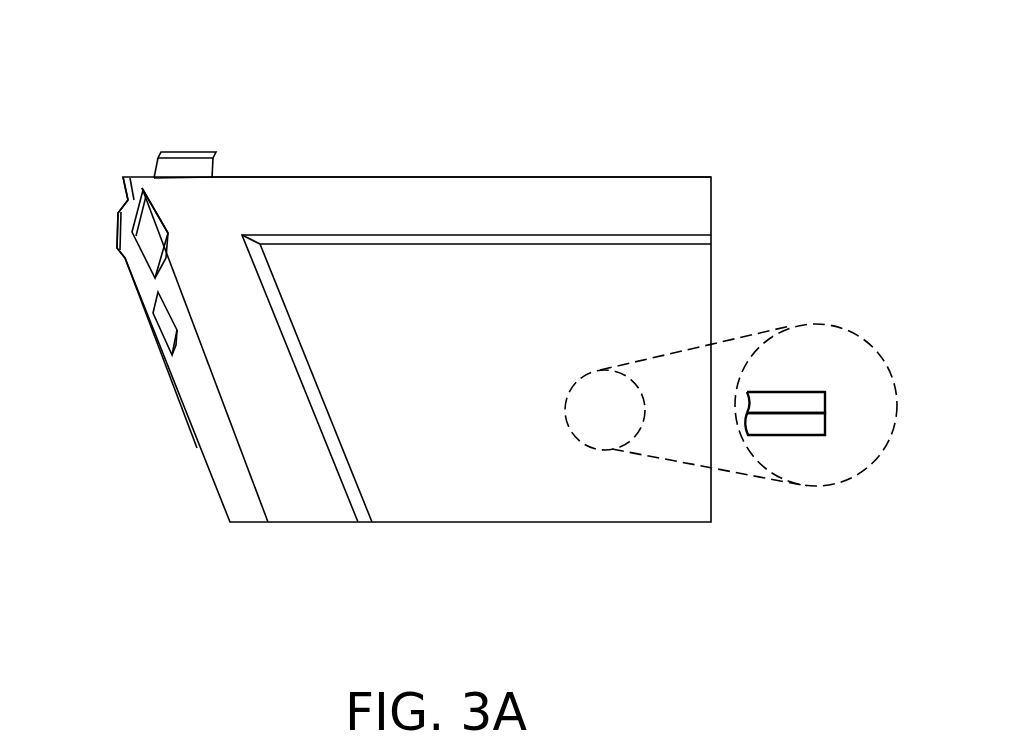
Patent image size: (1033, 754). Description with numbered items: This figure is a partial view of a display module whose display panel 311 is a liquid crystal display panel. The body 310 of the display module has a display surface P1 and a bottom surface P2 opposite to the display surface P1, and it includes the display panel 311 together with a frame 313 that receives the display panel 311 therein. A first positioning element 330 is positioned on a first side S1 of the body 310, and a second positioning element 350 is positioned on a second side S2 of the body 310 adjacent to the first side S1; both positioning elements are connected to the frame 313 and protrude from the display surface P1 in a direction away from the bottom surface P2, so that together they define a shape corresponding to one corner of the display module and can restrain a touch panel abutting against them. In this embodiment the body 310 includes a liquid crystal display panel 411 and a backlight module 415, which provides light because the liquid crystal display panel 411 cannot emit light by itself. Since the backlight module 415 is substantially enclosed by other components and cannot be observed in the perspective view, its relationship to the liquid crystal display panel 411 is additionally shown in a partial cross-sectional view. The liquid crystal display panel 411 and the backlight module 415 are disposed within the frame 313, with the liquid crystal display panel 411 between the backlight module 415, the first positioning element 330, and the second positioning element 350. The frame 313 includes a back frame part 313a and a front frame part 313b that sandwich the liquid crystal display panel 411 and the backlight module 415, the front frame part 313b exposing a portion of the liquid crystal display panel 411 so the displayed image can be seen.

The body 310 is at (512, 195).
The display panel 311 is at (311, 384).
The frame 313 is at (153, 280).
The back frame part 313a is at (121, 217).
The front frame part 313b is at (142, 183).
The first positioning element 330 is at (188, 173).
The second positioning element 350 is at (152, 240).
The liquid crystal display panel 411 is at (825, 397).
The backlight module 415 is at (825, 420).
The display surface P1 is at (183, 213).
The bottom surface P2 is at (137, 303).
The first side S1 is at (420, 175).
The second side S2 is at (193, 357).